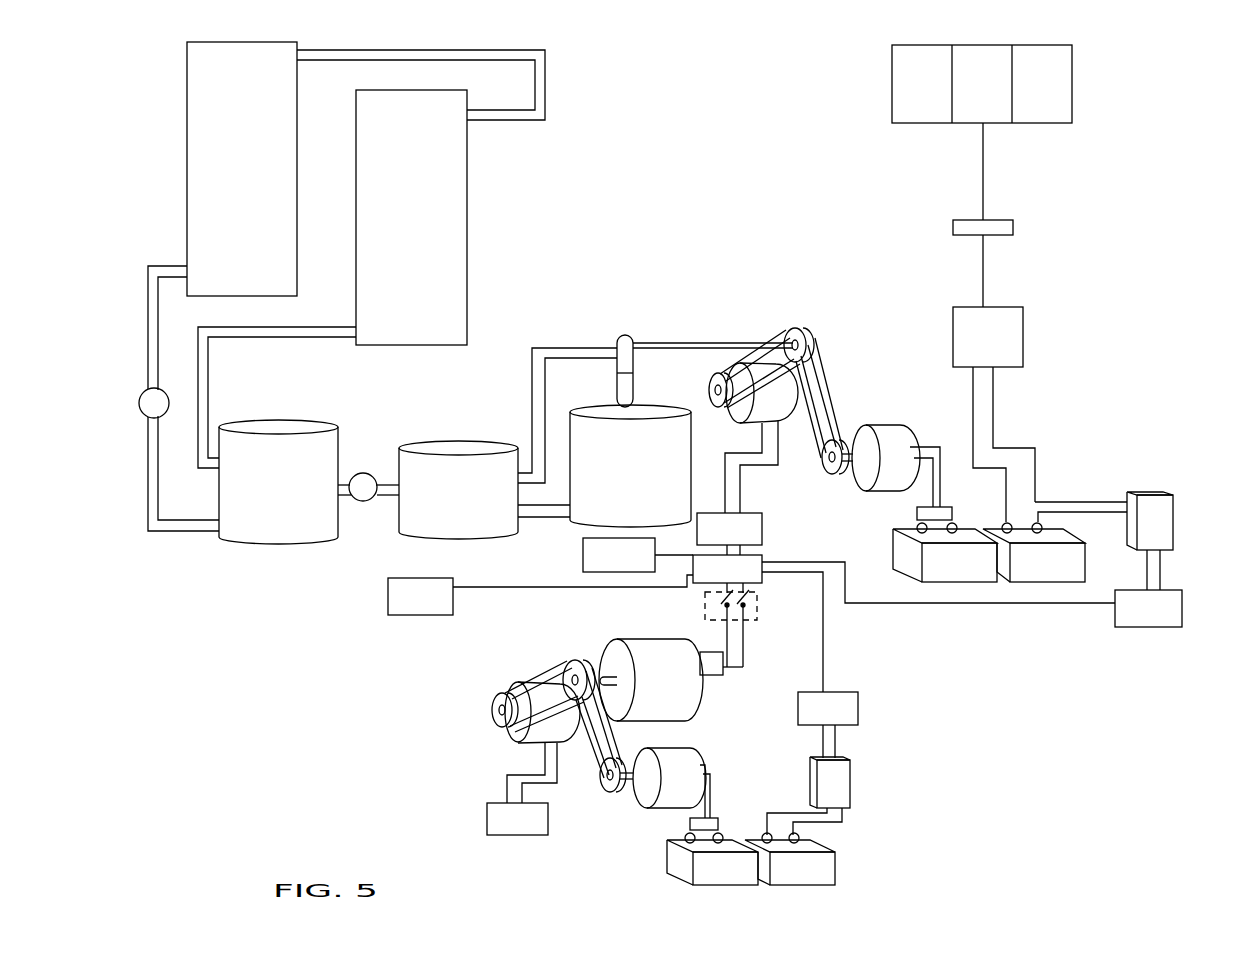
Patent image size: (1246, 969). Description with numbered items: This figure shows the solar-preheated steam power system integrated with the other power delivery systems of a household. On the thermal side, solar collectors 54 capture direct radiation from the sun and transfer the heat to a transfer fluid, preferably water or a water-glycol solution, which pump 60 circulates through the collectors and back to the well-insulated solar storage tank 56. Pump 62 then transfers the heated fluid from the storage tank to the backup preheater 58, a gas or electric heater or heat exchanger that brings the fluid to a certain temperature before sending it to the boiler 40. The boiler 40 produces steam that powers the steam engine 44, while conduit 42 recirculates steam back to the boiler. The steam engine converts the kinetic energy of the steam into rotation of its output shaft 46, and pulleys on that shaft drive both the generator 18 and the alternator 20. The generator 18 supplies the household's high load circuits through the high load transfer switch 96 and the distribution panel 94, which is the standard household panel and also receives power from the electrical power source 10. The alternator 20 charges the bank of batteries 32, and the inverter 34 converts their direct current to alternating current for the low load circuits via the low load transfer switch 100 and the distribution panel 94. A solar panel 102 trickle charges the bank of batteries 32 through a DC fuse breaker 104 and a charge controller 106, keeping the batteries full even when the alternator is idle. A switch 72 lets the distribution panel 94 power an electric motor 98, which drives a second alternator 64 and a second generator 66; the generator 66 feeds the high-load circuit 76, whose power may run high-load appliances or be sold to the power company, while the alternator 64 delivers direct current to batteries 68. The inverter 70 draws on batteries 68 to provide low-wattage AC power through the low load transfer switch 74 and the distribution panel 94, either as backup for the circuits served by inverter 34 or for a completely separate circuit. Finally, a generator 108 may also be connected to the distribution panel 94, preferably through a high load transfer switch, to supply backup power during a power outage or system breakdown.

The electrical power source 10 is at (585, 550).
The generator 18 is at (737, 410).
The alternator 20 is at (901, 440).
The bank of batteries 32 is at (993, 628).
The inverter 34 is at (1173, 503).
The boiler 40 is at (646, 415).
The conduit 42 is at (553, 347).
The steam engine 44 is at (624, 333).
The output shaft 46 is at (677, 346).
The solar collectors 54 is at (322, 286).
The solar storage tank 56 is at (279, 538).
The backup preheater 58 is at (457, 447).
The pump 60 is at (142, 395).
The pump 62 is at (363, 474).
The alternator 64 is at (638, 797).
The generator 66 is at (523, 682).
The batteries 68 is at (800, 859).
The inverter 70 is at (835, 787).
The switch 72 is at (705, 600).
The low load transfer switch 74 is at (858, 712).
The high-load circuit 76 is at (485, 822).
The distribution panel 94 is at (758, 583).
The high load transfer switch 96 is at (753, 525).
The electric motor 98 is at (687, 688).
The low load transfer switch 100 is at (1182, 598).
The solar panel 102 is at (1043, 123).
The DC fuse breaker 104 is at (1003, 235).
The charge controller 106 is at (1013, 337).
The generator 108 is at (405, 608).